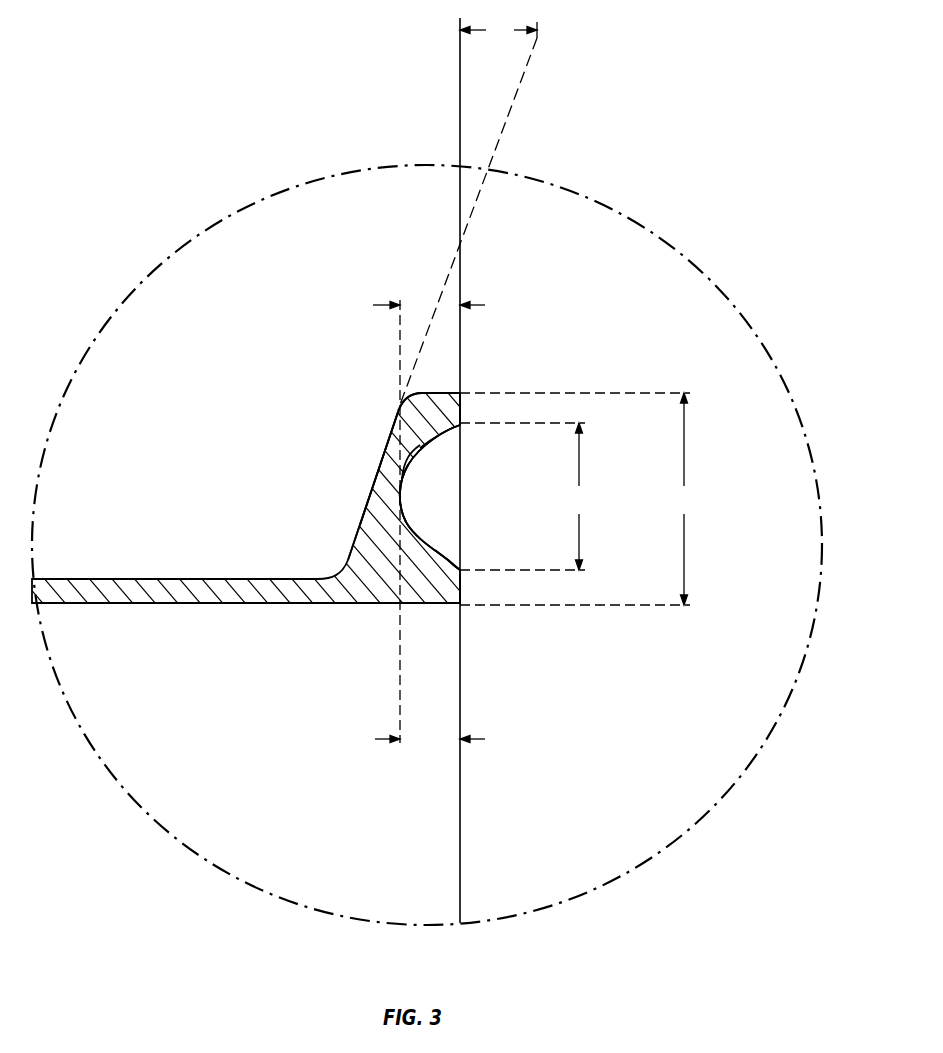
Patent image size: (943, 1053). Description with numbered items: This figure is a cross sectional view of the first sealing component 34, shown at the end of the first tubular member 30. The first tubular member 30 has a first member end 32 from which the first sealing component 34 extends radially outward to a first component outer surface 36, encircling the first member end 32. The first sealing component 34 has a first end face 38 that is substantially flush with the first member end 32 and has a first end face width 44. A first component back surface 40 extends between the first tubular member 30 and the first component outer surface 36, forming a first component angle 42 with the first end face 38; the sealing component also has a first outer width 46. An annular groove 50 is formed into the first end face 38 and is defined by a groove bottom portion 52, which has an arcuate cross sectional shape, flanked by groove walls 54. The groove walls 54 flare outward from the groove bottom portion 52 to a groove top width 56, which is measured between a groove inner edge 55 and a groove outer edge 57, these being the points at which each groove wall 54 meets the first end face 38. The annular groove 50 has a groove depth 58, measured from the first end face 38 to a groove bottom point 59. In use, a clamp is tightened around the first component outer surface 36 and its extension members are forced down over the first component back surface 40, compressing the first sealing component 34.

The first tubular member 30 is at (150, 592).
The first member end 32 is at (462, 590).
The first sealing component 34 is at (387, 506).
The first component outer surface 36 is at (420, 393).
The first end face 38 is at (462, 397).
The first component back surface 40 is at (382, 461).
The first component angle 42 is at (467, 214).
The first end face width 44 is at (580, 499).
The first outer width 46 is at (378, 305).
The annular groove 50 is at (425, 540).
The groove bottom portion 52 is at (403, 515).
The groove walls 54 is at (462, 450).
The groove inner edge 55 is at (462, 568).
The groove top width 56 is at (581, 496).
The groove outer edge 57 is at (462, 427).
The groove depth 58 is at (380, 739).
The groove bottom point 59 is at (402, 497).